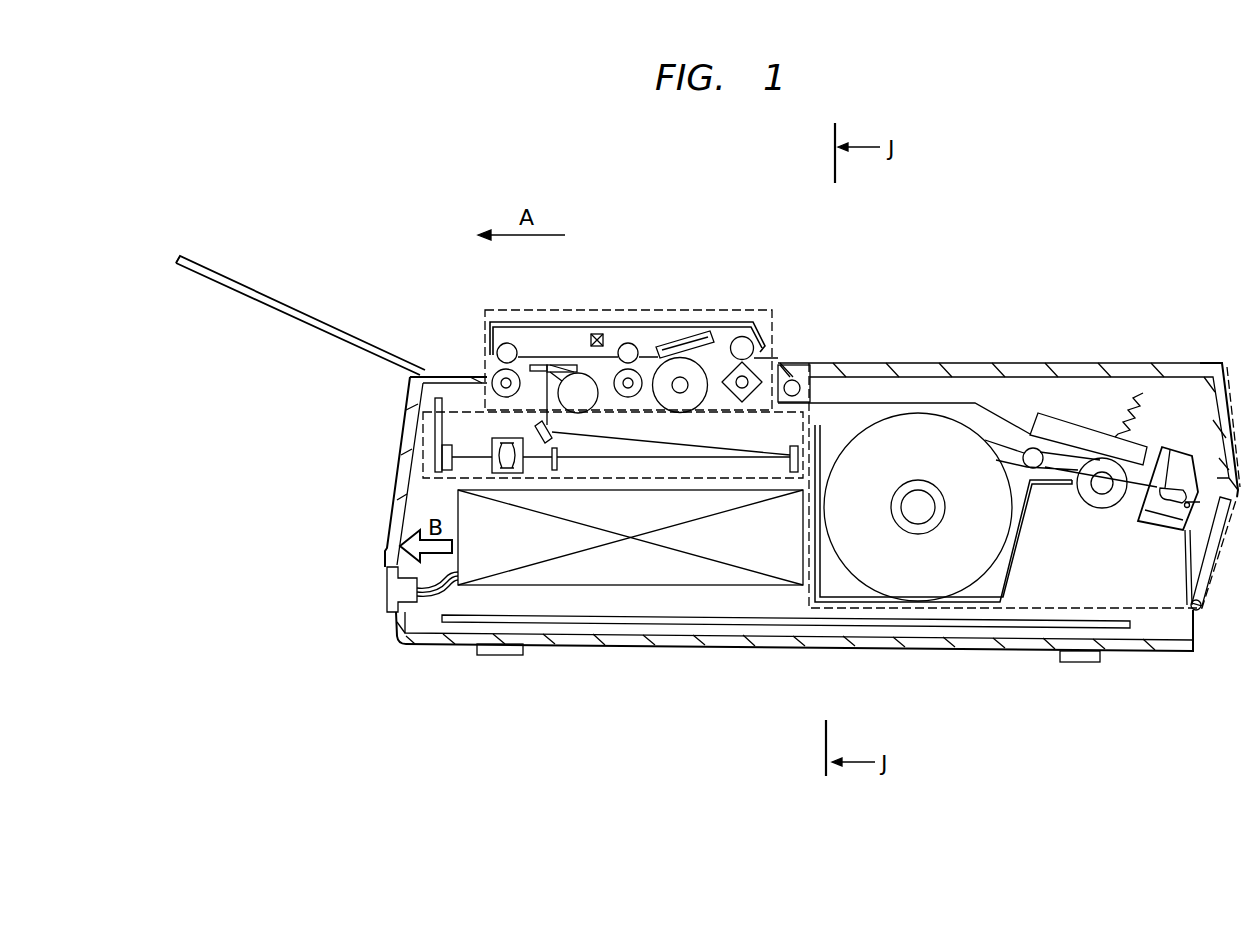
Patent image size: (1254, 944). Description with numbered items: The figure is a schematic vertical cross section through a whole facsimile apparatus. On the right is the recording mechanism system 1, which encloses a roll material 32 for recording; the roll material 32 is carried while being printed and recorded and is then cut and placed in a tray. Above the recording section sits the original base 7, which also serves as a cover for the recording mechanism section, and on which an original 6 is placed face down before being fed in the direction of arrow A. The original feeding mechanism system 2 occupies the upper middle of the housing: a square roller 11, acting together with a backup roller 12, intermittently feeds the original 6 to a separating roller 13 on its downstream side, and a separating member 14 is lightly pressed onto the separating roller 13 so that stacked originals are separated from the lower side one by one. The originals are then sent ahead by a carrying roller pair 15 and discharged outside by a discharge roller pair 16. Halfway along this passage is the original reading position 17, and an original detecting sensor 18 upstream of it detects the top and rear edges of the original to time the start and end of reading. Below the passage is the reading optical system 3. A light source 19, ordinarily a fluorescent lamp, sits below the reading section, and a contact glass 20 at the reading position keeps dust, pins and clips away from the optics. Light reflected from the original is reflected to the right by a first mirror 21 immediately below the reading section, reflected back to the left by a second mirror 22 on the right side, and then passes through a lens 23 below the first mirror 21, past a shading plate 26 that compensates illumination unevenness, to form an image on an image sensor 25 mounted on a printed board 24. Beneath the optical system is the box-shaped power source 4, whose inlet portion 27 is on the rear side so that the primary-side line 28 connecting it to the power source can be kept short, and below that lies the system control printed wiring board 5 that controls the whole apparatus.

The recording mechanism system 1 is at (1155, 365).
The original feeding mechanism system 2 is at (632, 310).
The reading optical system 3 is at (423, 432).
The power source 4 is at (458, 505).
The system control printed wiring board 5 is at (641, 622).
The original 6 is at (988, 364).
The original base 7 is at (1193, 364).
The square roller 11 is at (770, 362).
The backup roller 12 is at (752, 340).
The separating roller 13 is at (704, 372).
The separating member 14 is at (690, 343).
The carrying roller pair 15 is at (641, 368).
The discharge roller pair 16 is at (492, 373).
The original reading position 17 is at (568, 340).
The original detecting sensor 18 is at (598, 333).
The light source 19 is at (596, 406).
The contact glass 20 is at (533, 364).
The first mirror 21 is at (534, 430).
The second mirror 22 is at (790, 460).
The lens 23 is at (492, 446).
The printed board 24 is at (435, 446).
The image sensor 25 is at (442, 463).
The shading plate 26 is at (558, 466).
The inlet portion 27 is at (387, 592).
The line 28 is at (424, 586).
The roll material 32 is at (851, 565).